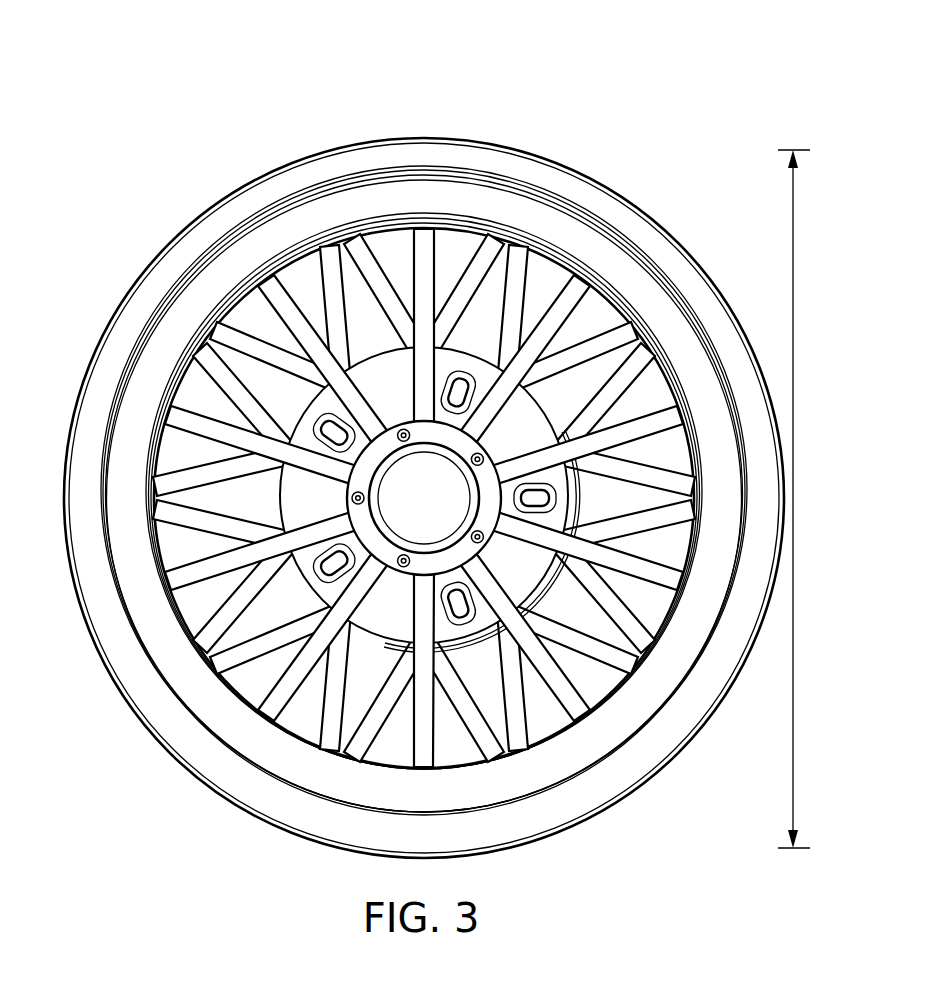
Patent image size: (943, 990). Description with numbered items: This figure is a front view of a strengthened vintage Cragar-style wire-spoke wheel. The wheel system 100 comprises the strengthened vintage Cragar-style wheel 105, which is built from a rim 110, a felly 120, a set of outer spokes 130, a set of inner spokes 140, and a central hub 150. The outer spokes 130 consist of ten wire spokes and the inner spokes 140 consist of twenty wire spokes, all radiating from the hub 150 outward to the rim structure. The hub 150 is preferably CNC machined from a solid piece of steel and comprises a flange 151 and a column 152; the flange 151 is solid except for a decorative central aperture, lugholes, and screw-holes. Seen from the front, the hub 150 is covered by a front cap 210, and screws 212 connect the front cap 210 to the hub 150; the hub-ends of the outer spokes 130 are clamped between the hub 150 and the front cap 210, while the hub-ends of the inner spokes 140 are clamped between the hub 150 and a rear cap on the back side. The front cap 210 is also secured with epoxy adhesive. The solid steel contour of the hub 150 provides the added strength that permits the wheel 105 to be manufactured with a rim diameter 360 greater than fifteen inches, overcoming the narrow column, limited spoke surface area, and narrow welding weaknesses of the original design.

The wheel system 100 is at (518, 50).
The strengthened vintage Cragar-style wheel 105 is at (562, 84).
The rim 110 is at (447, 158).
The felly 120 is at (342, 208).
The outer spokes 130 is at (282, 303).
The inner spokes 140 is at (336, 272).
The hub 150 is at (496, 525).
The flange 151 is at (215, 382).
The column 152 is at (487, 487).
The front cap 210 is at (377, 535).
The screws 212 is at (198, 600).
The rim diameter 360 is at (780, 499).